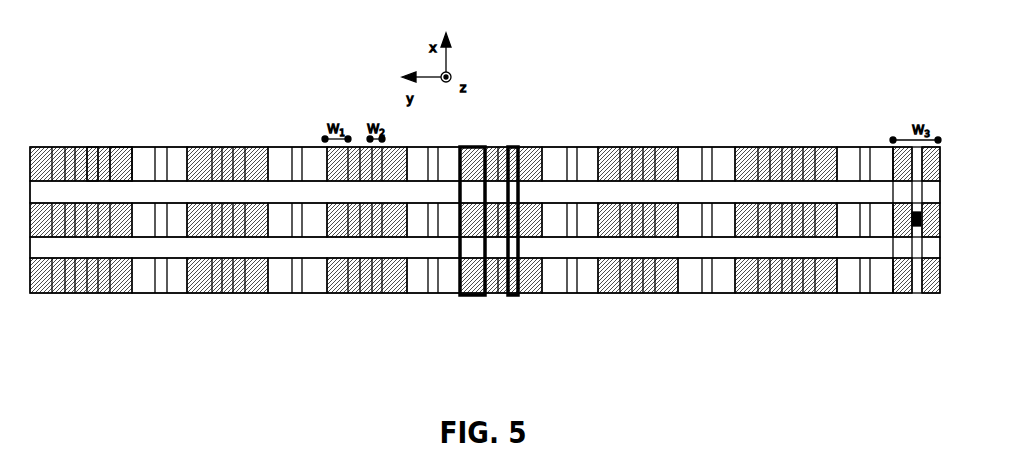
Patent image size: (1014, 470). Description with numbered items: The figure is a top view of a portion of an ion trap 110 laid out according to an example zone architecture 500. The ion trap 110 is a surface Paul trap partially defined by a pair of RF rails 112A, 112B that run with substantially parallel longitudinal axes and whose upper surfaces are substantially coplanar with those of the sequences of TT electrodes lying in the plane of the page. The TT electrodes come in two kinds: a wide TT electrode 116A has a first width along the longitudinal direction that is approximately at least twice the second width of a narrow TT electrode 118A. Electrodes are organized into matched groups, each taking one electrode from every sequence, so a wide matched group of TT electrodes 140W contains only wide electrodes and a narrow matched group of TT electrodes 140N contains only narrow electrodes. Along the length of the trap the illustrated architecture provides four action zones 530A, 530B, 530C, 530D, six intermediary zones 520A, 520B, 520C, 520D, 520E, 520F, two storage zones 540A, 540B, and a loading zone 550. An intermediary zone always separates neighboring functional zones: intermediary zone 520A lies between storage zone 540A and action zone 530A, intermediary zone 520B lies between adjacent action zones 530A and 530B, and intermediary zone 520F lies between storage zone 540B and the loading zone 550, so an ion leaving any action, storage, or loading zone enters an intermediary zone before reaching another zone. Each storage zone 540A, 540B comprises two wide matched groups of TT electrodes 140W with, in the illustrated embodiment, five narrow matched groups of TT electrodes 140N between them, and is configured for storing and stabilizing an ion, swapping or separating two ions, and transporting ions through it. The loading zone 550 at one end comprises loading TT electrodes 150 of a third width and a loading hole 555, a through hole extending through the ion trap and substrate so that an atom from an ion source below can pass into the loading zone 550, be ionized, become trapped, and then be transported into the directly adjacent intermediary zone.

The zone architecture 500 is at (627, 95).
The ion trap 110 is at (655, 125).
The RF rail 112A is at (485, 192).
The RF rail 112B is at (485, 247).
The wide TT electrode 116A is at (122, 158).
The narrow TT electrode 118A is at (90, 158).
The wide matched group of TT electrodes 140W is at (473, 147).
The narrow matched group of TT electrodes 140N is at (515, 147).
The loading TT electrode 150 is at (914, 212).
The loading hole 555 is at (913, 214).
The intermediary zone 520A is at (132, 296).
The intermediary zone 520B is at (268, 296).
The intermediary zone 520C is at (407, 296).
The intermediary zone 520D is at (542, 296).
The intermediary zone 520E is at (678, 296).
The intermediary zone 520F is at (837, 296).
The action zone 530A is at (187, 296).
The action zone 530B is at (327, 296).
The action zone 530C is at (460, 296).
The action zone 530D is at (598, 296).
The storage zone 540A is at (30, 296).
The storage zone 540B is at (735, 296).
The loading zone 550 is at (893, 296).